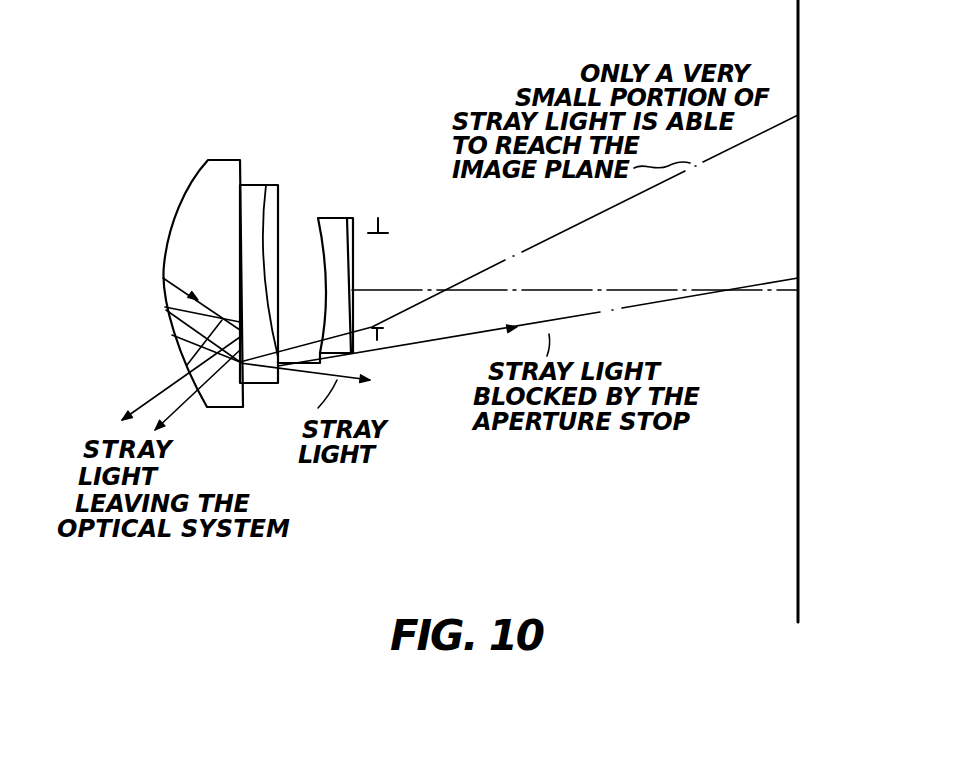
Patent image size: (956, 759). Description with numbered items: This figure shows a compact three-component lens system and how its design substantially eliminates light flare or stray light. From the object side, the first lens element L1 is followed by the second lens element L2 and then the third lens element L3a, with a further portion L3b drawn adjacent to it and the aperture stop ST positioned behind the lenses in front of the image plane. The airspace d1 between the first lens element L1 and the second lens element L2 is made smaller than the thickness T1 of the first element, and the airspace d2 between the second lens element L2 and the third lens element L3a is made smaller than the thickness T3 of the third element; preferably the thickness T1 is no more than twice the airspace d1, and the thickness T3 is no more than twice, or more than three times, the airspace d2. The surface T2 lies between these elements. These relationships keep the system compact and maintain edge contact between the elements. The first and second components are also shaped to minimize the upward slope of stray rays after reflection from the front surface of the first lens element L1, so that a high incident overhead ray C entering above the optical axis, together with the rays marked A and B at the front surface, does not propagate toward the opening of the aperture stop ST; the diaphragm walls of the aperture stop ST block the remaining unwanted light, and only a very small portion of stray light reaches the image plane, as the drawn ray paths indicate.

The first lens element L1 is at (182, 295).
The second lens element L2 is at (261, 284).
The third lens element L3a is at (322, 222).
The third lens element rear part L3b is at (350, 232).
The first lens element thickness T1 is at (212, 224).
The second surface T2 is at (238, 300).
The third lens element thickness T3 is at (295, 283).
The airspace between first and second lens elements d1 is at (285, 258).
The airspace between second and third lens elements d2 is at (290, 228).
The point A on first surface A is at (166, 312).
The point B on first surface B is at (163, 299).
The high incident overhead light ray C is at (158, 240).
The aperture stop ST is at (386, 228).